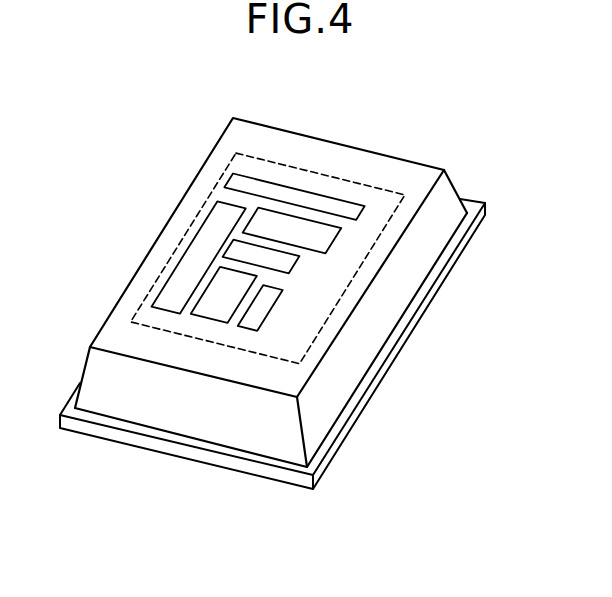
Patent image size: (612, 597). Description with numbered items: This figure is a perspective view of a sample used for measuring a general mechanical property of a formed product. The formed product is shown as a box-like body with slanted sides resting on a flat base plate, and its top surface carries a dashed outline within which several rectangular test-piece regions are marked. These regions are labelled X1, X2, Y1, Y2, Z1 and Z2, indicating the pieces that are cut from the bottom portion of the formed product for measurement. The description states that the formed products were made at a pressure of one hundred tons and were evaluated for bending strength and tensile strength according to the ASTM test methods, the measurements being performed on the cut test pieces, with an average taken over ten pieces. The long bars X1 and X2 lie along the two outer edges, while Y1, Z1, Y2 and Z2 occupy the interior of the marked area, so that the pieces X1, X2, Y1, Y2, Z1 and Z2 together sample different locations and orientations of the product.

The X-direction electrode X1 is at (268, 192).
The X-direction electrode X2 is at (187, 280).
The Y-direction electrode Y1 is at (318, 235).
The Y-direction electrode Y2 is at (217, 310).
The Z-direction electrode Z1 is at (282, 263).
The Z-direction electrode Z2 is at (260, 317).